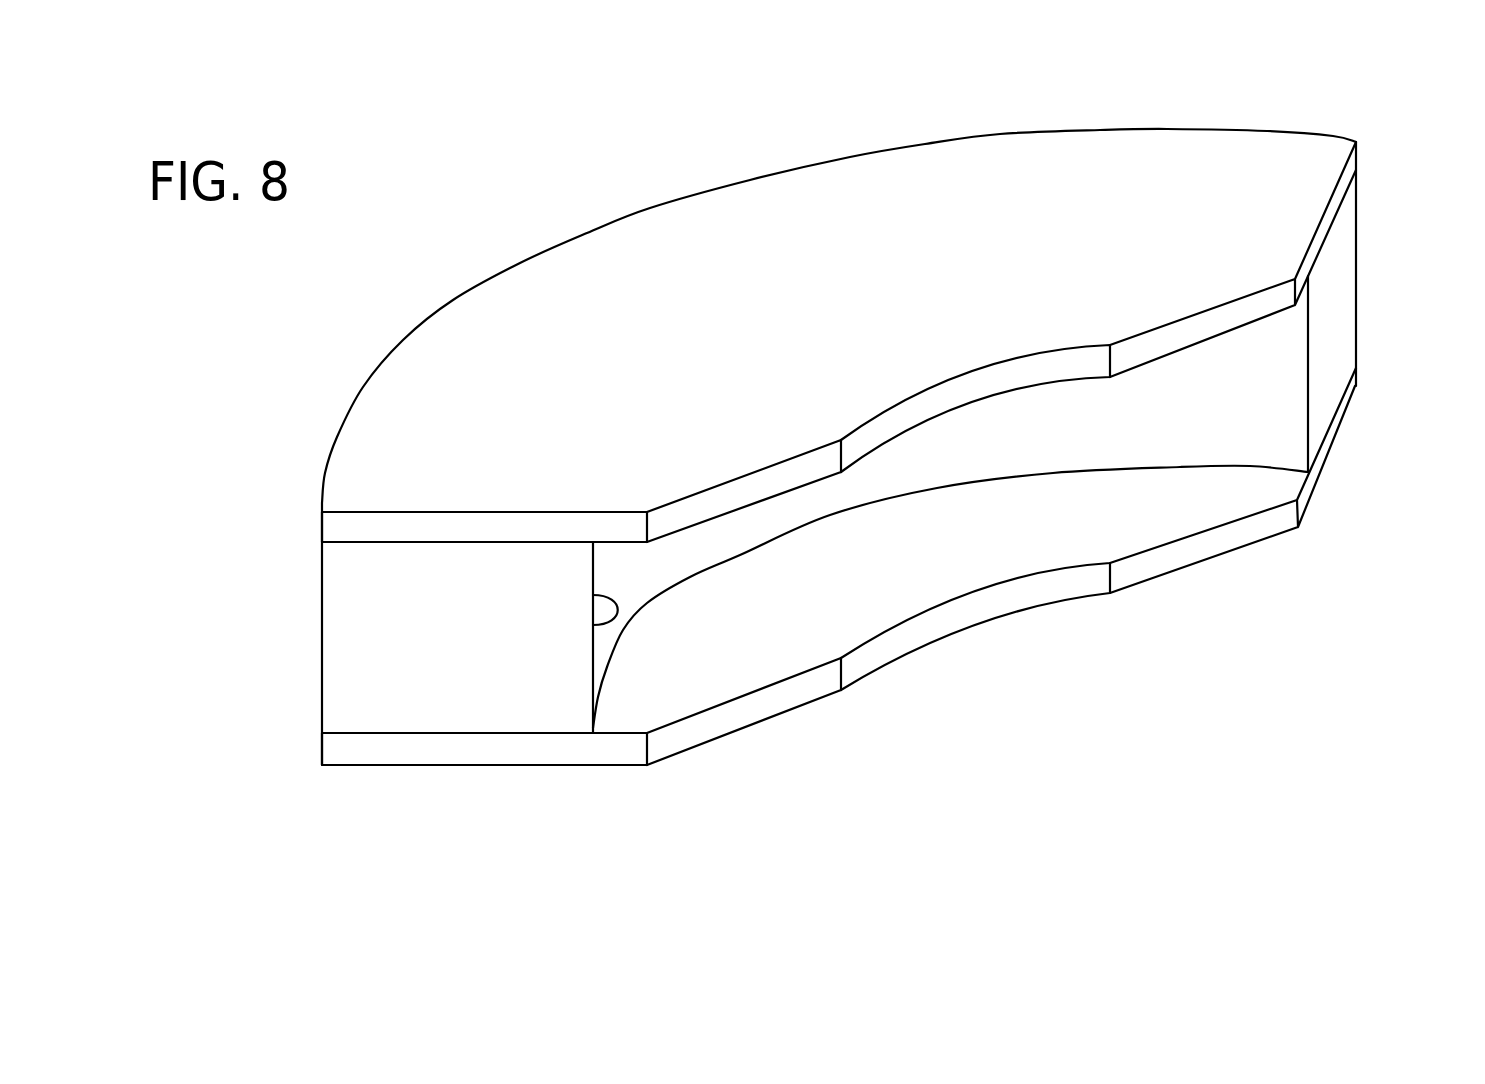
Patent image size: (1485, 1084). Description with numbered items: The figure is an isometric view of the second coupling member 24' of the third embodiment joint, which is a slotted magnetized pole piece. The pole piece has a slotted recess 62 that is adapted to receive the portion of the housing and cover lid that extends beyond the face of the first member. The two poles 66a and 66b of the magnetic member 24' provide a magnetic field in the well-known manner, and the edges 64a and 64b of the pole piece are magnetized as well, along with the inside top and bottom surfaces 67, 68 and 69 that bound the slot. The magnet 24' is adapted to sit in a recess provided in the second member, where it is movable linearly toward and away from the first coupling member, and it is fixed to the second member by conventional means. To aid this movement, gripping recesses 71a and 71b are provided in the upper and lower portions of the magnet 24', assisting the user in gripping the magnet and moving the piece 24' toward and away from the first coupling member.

The second coupling member 24' is at (839, 408).
The slotted recess 62 is at (593, 625).
The edge of the pole piece 64a is at (795, 468).
The edge of the pole piece 64b is at (792, 697).
The pole 66a is at (443, 566).
The pole 66b is at (445, 705).
The inside top surface 67 is at (1173, 353).
The inside surface 68 is at (1280, 403).
The inside bottom surface 69 is at (912, 560).
The gripping recess 71a is at (1040, 369).
The gripping recess 71b is at (1068, 587).